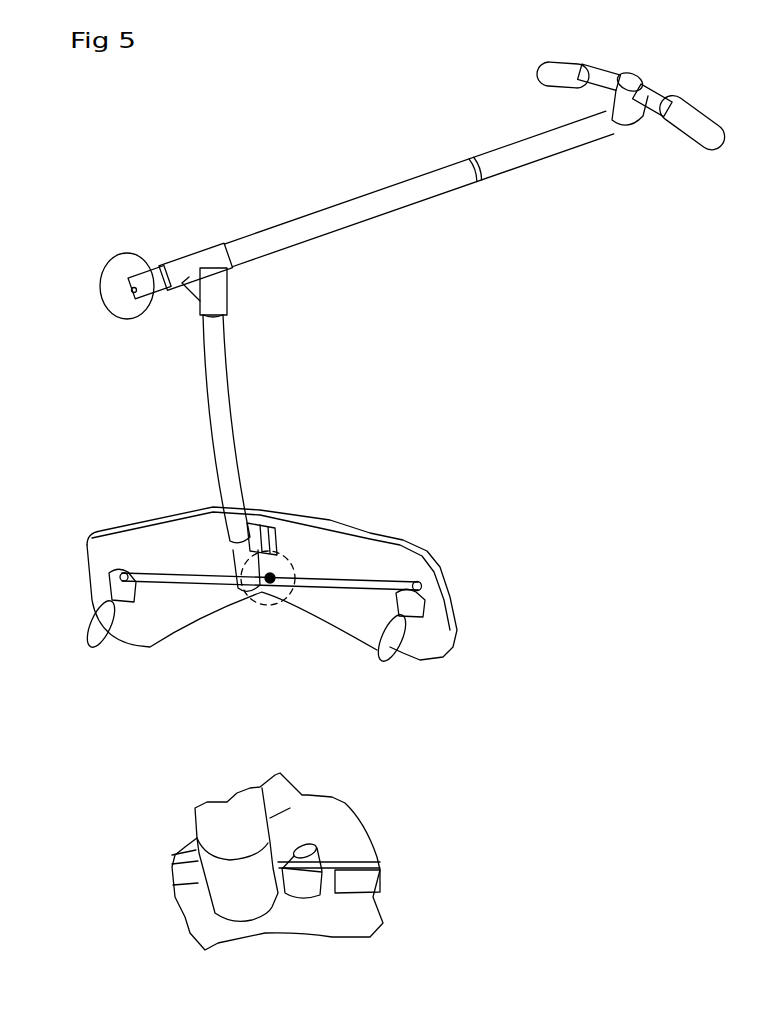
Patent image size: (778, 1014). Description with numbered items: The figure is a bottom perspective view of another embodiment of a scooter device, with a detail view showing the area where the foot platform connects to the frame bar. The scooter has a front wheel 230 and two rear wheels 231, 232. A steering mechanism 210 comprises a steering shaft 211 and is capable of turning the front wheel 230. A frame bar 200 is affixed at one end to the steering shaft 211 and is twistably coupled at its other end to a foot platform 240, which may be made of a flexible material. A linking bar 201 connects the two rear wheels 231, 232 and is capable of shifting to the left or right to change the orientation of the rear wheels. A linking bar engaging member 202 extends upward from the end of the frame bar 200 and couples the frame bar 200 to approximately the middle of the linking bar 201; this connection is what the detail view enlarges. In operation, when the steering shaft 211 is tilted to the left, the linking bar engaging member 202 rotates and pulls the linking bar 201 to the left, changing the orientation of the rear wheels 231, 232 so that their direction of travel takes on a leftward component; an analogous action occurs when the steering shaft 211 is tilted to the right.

The frame bar 200 is at (226, 446).
The linking bar 201 is at (197, 590).
The linking bar engaging member 202 is at (287, 888).
The steering mechanism 210 is at (477, 282).
The steering shaft 211 is at (346, 214).
The front wheel 230 is at (102, 286).
The rear wheel 231 is at (389, 660).
The rear wheel 232 is at (101, 648).
The foot platform 240 is at (346, 565).